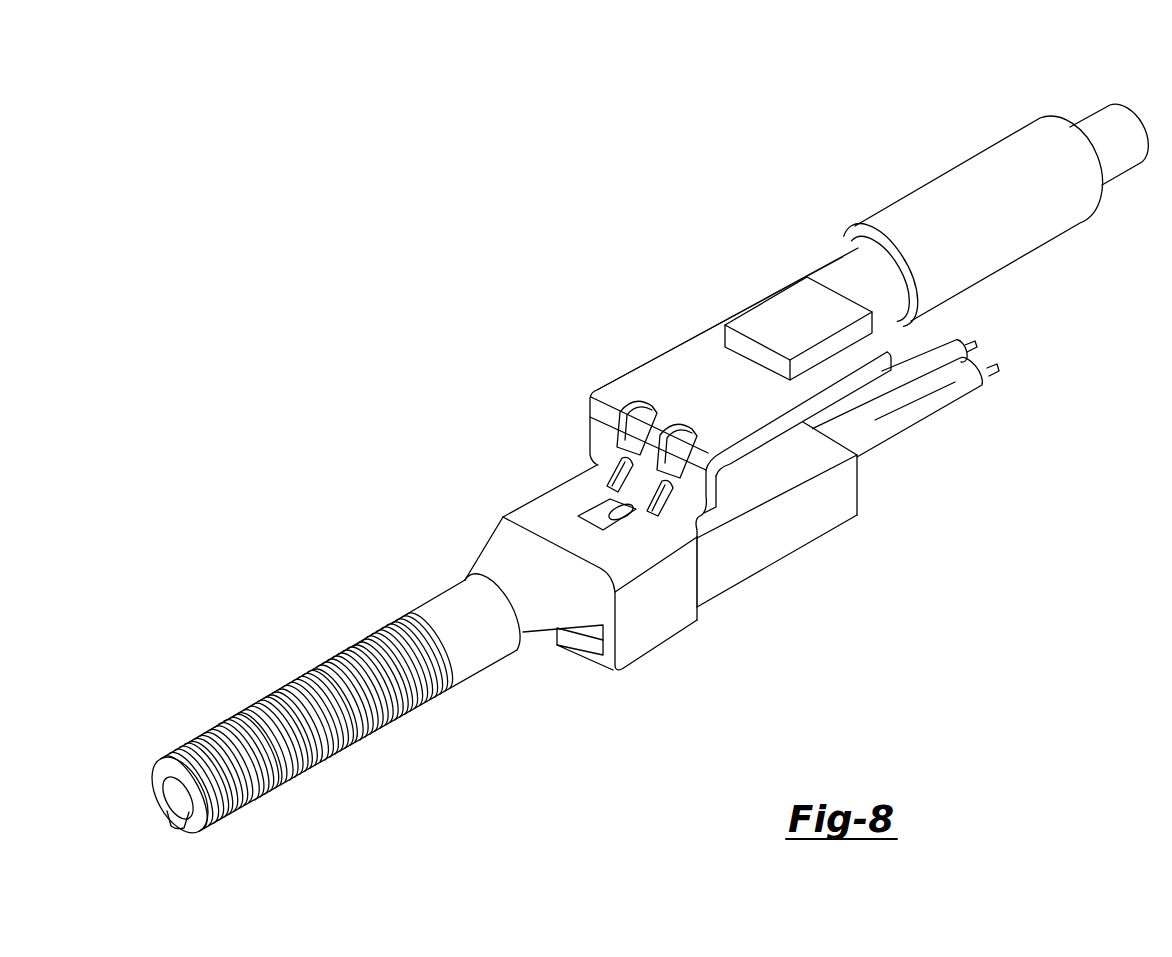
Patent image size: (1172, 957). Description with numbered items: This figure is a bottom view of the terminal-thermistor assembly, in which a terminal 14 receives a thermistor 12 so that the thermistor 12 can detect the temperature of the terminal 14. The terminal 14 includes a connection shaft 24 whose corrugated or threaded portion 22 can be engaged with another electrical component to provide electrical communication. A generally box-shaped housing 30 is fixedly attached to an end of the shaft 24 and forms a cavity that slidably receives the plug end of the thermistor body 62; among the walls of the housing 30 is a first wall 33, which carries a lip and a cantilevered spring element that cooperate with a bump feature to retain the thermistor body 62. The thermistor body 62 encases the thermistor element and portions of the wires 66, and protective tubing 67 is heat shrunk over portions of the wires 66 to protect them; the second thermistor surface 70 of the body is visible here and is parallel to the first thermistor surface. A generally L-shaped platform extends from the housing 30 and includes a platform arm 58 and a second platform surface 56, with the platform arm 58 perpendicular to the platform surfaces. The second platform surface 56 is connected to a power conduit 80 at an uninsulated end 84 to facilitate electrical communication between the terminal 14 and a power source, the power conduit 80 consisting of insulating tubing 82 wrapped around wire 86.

The thermistor 12 is at (789, 590).
The terminal 14 is at (533, 362).
The threaded portion 22 is at (233, 715).
The connection shaft 24 is at (310, 776).
The housing 30 is at (666, 654).
The first wall 33 is at (668, 622).
The second platform surface 56 is at (672, 367).
The platform arm 58 is at (590, 424).
The thermistor body 62 is at (883, 507).
The wires 66 is at (976, 342).
The protective tubing 67 is at (930, 400).
The second thermistor surface 70 is at (767, 492).
The power conduit 80 is at (914, 164).
The insulating tubing 82 is at (977, 172).
The uninsulated end 84 is at (789, 280).
The wire 86 is at (1095, 128).